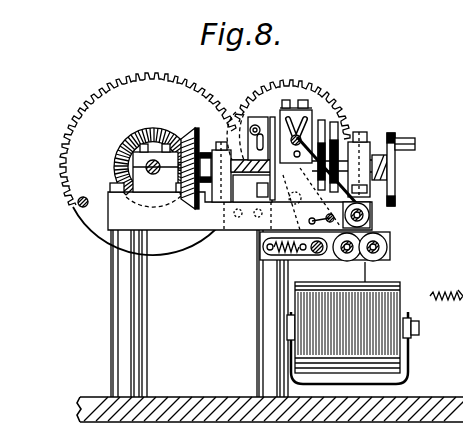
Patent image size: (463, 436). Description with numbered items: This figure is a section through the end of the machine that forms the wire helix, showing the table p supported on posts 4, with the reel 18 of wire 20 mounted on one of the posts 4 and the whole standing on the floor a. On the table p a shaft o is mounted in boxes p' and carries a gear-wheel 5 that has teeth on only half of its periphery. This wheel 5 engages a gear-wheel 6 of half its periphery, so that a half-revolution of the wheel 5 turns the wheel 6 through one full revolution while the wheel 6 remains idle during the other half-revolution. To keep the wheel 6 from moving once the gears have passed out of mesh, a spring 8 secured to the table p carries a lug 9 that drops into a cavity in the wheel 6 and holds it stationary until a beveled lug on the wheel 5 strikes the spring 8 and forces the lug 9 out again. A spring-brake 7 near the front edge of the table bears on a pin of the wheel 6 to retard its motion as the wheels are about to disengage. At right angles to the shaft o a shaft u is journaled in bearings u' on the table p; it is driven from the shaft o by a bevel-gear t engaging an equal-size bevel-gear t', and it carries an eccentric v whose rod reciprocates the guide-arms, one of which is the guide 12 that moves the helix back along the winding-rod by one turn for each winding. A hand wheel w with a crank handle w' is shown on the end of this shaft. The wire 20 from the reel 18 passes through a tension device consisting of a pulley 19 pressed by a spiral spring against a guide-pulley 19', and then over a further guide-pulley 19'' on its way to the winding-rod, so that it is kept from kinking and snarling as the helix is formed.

The gear-wheel 5 is at (113, 121).
The gear-wheel 6 is at (262, 77).
The spring 8 is at (232, 138).
The lug 9 is at (256, 126).
The guide-arm 12 is at (316, 122).
The wire 20 is at (433, 292).
The eccentric v is at (344, 141).
The bearing u' is at (293, 187).
The crank handle w' is at (412, 135).
The hand wheel w is at (400, 169).
The guide-pulley 19'' is at (402, 215).
The pulley 19 is at (374, 237).
The guide-pulley 19' is at (389, 247).
The reel 18 is at (386, 312).
The floor a is at (431, 414).
The post 4 is at (257, 317).
The bevel-gear t is at (153, 158).
The bevel-gear t' is at (190, 157).
The box p' is at (137, 167).
The shaft o is at (151, 177).
The table p is at (240, 211).
The shaft u is at (248, 195).
The spring-brake 7 is at (294, 201).